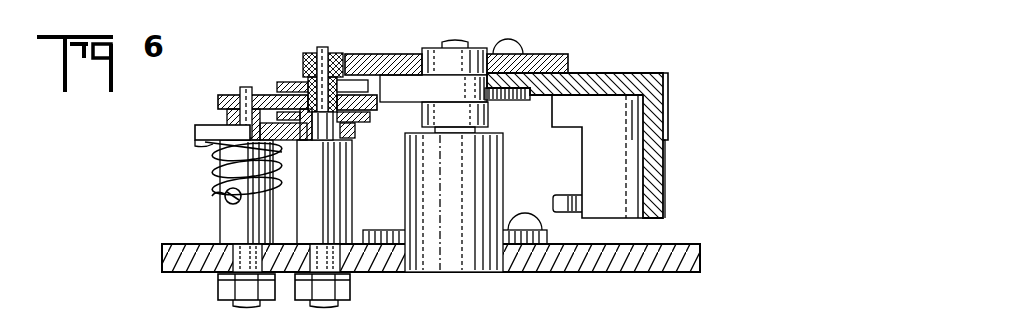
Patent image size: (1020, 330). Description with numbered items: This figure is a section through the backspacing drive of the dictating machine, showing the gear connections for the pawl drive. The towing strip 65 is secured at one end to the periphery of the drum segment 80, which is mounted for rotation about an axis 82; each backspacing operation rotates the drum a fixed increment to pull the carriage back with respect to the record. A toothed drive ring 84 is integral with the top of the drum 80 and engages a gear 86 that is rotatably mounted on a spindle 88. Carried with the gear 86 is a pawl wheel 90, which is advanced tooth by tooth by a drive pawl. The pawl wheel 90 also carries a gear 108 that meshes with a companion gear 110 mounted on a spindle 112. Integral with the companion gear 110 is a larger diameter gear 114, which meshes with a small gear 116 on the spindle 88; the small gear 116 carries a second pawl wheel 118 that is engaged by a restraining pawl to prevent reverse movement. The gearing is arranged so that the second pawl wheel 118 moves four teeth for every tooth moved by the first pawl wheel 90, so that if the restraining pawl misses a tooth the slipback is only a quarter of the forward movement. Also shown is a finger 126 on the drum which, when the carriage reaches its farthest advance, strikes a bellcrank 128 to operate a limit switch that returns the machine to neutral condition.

The towing strip 65 is at (668, 100).
The drum segment 80 is at (620, 80).
The axis 82 is at (452, 41).
The toothed drive ring 84 is at (388, 54).
The gear 86 is at (303, 55).
The spindle 88 is at (325, 47).
The pawl wheel 90 is at (297, 83).
The gear 108 is at (373, 96).
The companion gear 110 is at (218, 100).
The spindle 112 is at (247, 87).
The larger diameter gear 114 is at (208, 126).
The small gear 116 is at (355, 130).
The second pawl wheel 118 is at (370, 117).
The finger 126 is at (583, 165).
The bellcrank 128 is at (562, 196).